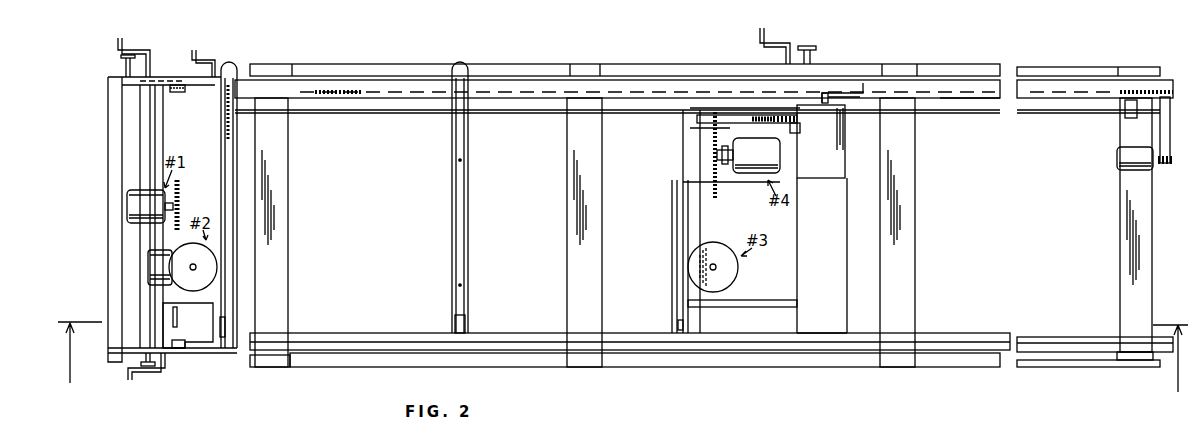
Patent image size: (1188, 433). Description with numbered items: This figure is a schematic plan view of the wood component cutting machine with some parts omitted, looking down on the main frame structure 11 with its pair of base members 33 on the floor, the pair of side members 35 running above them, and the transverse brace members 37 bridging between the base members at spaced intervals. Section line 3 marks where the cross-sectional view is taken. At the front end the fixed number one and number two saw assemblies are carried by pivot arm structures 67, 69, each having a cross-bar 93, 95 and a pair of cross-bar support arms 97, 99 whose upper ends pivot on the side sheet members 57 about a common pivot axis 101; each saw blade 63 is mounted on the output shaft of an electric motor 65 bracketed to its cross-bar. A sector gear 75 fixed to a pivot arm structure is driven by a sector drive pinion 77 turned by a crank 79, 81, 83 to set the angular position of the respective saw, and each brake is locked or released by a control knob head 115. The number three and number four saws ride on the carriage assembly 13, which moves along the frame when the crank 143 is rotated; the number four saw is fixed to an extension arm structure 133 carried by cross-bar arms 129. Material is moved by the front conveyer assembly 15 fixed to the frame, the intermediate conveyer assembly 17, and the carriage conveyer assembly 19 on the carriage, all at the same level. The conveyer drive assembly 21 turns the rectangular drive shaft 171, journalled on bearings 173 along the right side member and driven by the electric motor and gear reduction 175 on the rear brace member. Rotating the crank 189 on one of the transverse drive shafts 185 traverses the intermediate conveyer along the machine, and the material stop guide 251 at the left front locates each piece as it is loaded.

The main frame structure 11 is at (583, 370).
The carriage assembly 13 is at (848, 293).
The front conveyer assembly 15 is at (222, 145).
The intermediate conveyer assembly 17 is at (470, 245).
The carriage conveyer assembly 19 is at (673, 274).
The conveyer drive assembly 21 is at (1160, 140).
The base members 33 is at (490, 64).
The side members 35 is at (1170, 80).
The transverse brace members 37 is at (290, 248).
The side sheet members 57 is at (168, 75).
The saw blade 63 is at (180, 190).
The electric motor 65 is at (128, 207).
The pivot arm structure 67 is at (135, 152).
The pivot arm structure 69 is at (163, 125).
The sector gear 75 is at (767, 118).
The sector drive pinion 77 is at (797, 124).
The crank 79 is at (119, 40).
The crank 81 is at (138, 380).
The crank 83 is at (765, 37).
The cross-bar 93 is at (142, 123).
The cross-bar 95 is at (162, 105).
The cross-bar support arms 97 is at (140, 77).
The cross-bar support arms 99 is at (160, 90).
The common pivot axis 101 is at (180, 84).
The control knob head 115 is at (122, 57).
The cross-bar arms 129 is at (710, 324).
The extension arm structure 133 is at (683, 143).
The crank 143 is at (843, 93).
The drive shaft 171 is at (947, 113).
The bearings 173 is at (1127, 118).
The electric motor and gear reduction 175 is at (1117, 157).
The drive shafts 185 is at (213, 158).
The crank 189 is at (207, 57).
The material stop guide 251 is at (178, 313).
The section line 3- 3 is at (619, 360).